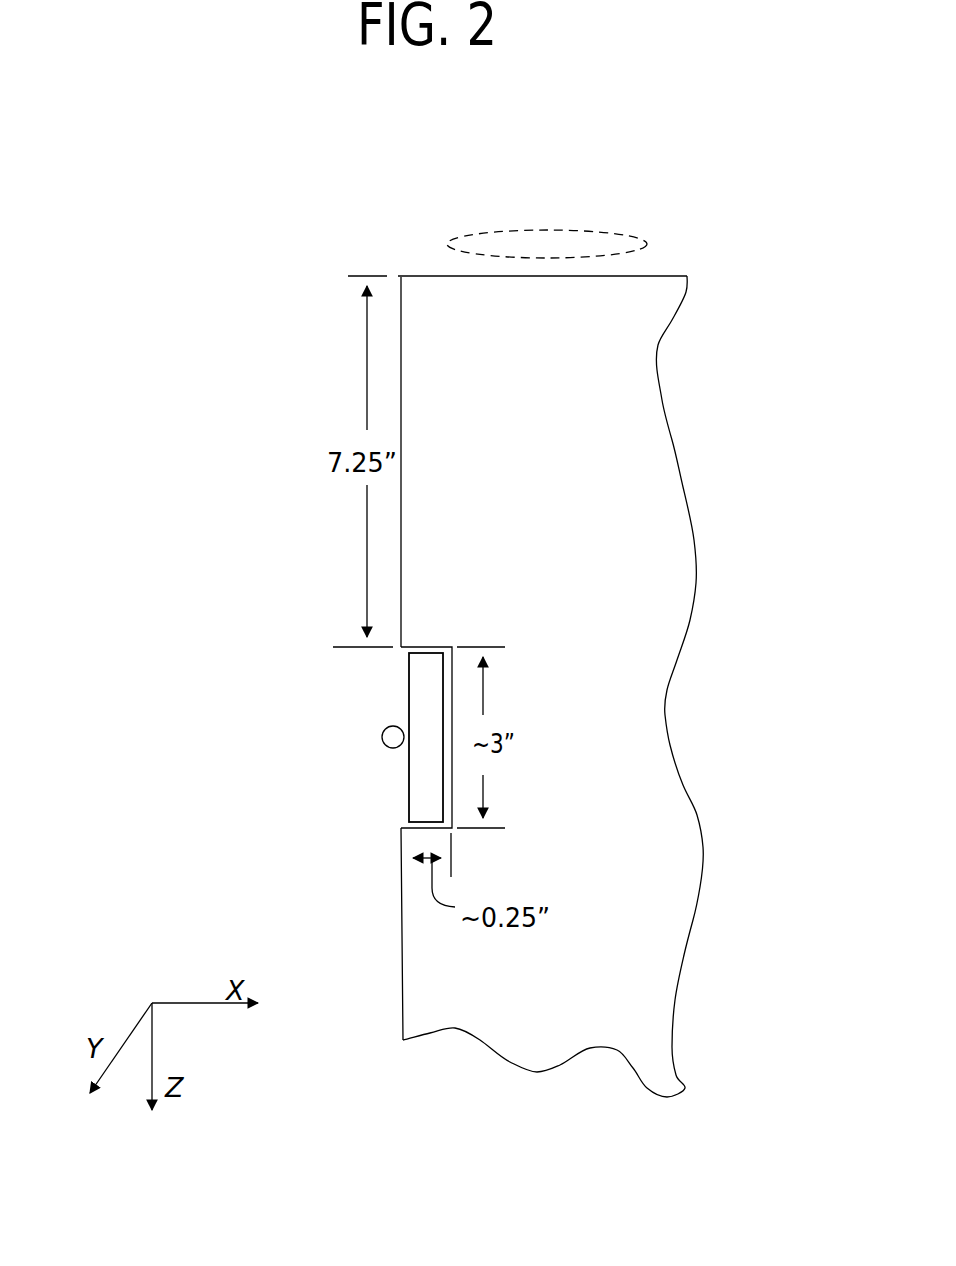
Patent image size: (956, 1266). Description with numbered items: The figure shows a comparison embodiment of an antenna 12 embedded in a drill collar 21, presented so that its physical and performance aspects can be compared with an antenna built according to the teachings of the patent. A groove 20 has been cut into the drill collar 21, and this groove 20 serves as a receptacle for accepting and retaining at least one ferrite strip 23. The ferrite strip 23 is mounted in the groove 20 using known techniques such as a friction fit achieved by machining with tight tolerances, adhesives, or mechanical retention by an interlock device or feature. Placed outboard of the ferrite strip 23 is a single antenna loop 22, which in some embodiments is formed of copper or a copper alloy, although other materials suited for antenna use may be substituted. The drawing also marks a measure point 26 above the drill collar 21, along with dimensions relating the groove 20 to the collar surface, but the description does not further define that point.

The antenna 12 is at (318, 672).
The groove 20 is at (417, 647).
The drill collar 21 is at (624, 686).
The single antenna loop 22 is at (278, 779).
The ferrite strip 23 is at (432, 665).
The measure point 26 is at (457, 247).